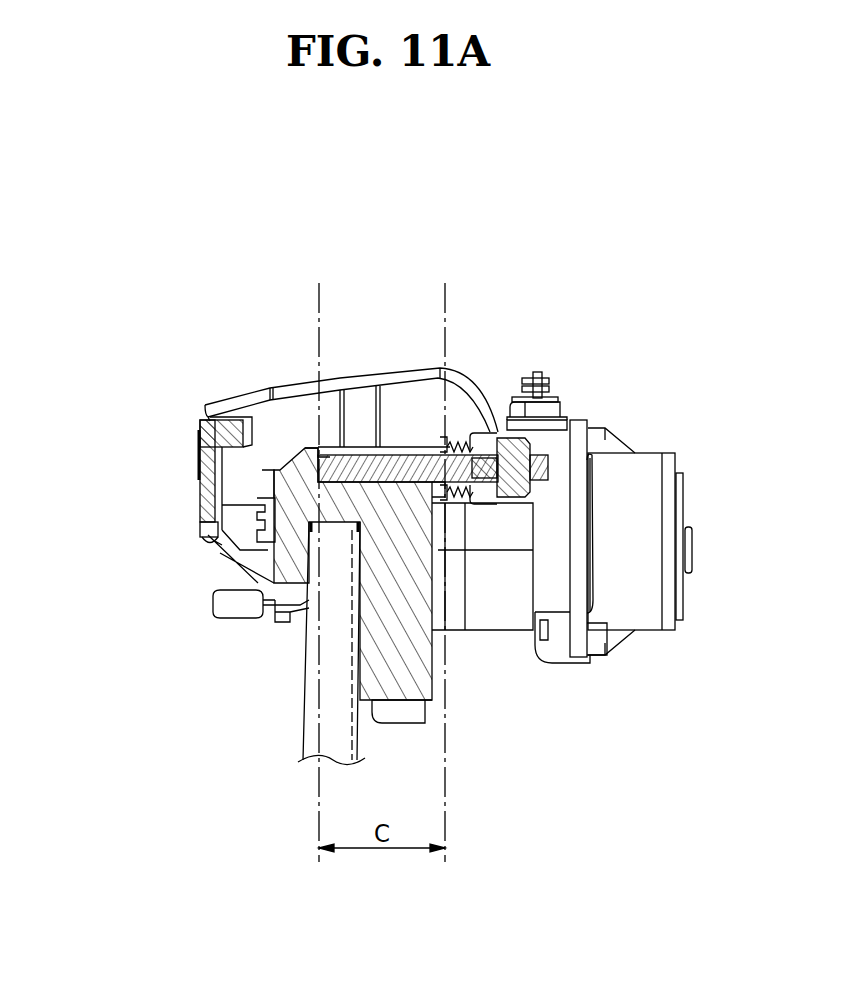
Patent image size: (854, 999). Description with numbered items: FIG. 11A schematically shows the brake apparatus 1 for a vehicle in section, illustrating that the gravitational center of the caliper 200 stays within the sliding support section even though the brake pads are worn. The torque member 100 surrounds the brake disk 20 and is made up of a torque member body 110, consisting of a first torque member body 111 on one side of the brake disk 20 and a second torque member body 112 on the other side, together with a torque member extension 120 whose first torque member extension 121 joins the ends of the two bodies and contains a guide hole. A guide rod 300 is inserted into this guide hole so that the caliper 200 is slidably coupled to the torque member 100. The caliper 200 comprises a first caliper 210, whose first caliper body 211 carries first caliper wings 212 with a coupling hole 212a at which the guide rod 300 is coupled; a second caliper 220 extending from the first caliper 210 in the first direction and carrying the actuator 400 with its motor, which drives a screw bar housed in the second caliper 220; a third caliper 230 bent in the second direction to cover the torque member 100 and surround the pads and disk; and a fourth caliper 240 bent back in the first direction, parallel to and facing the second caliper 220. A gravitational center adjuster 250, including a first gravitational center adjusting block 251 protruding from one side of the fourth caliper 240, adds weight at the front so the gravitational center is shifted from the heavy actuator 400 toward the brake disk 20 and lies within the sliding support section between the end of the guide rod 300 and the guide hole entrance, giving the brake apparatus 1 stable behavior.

The brake apparatus 1 is at (453, 257).
The brake disk 20 is at (317, 662).
The torque member 100 is at (430, 683).
The torque member body 110 is at (113, 570).
The first torque member body 111 is at (405, 622).
The second torque member body 112 is at (245, 576).
The torque member extension 120 is at (268, 484).
The first torque member extension 121 is at (200, 495).
The caliper 200 is at (313, 337).
The first caliper 210 is at (513, 310).
The first caliper body 211 is at (522, 445).
The first caliper wings 212 is at (497, 434).
The coupling hole 212a is at (318, 440).
The second caliper 220 is at (508, 600).
The third caliper 230 is at (360, 410).
The fourth caliper 240 is at (203, 420).
The gravitational center adjuster 250 is at (209, 532).
The first gravitational center adjusting block 251 is at (290, 480).
The guide rod 300 is at (382, 458).
The actuator 400 is at (638, 492).